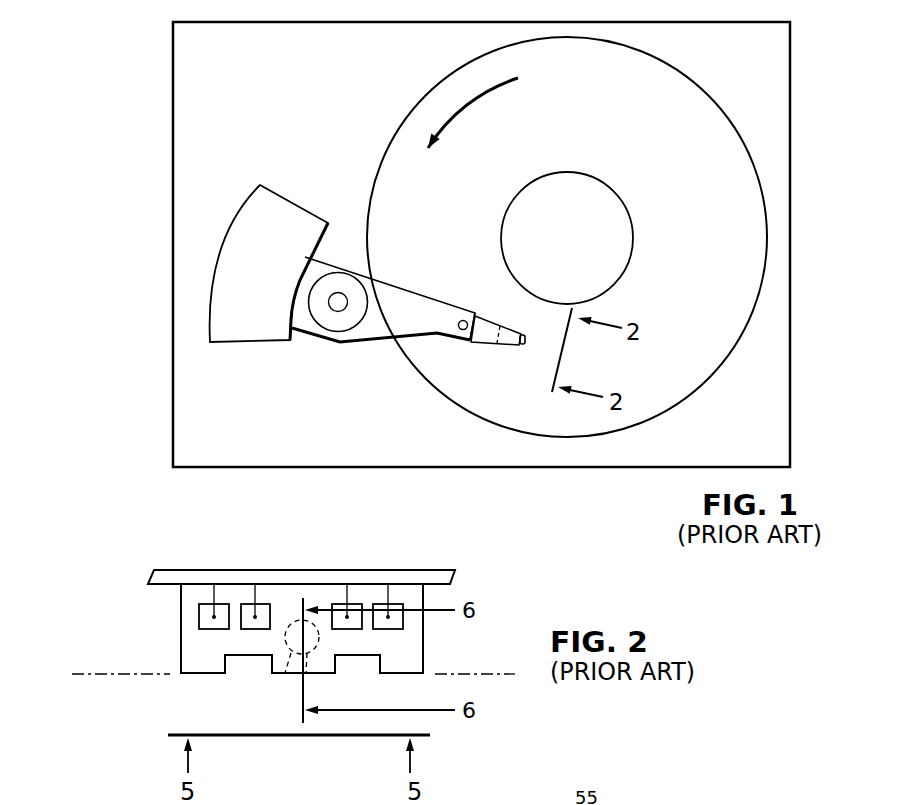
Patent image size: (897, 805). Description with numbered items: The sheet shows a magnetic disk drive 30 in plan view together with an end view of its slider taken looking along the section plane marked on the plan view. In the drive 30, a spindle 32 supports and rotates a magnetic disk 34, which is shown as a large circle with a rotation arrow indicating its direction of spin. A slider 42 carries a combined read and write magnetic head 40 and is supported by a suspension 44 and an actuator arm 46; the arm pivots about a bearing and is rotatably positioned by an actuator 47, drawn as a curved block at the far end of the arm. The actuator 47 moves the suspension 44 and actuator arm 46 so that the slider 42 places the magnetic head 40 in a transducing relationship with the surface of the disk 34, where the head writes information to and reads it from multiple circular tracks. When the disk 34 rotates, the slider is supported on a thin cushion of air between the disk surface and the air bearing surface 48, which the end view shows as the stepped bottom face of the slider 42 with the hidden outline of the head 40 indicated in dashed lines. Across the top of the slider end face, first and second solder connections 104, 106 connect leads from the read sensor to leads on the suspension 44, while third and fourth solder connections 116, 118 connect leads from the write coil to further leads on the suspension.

In FIG. 1, the magnetic disk drive 30 is at (807, 57).
In FIG. 1, the spindle 32 is at (606, 183).
In FIG. 1, the magnetic disk 34 is at (712, 257).
In FIG. 1, the magnetic head 40 is at (528, 346).
In FIG. 2, the magnetic head 40 is at (286, 677).
In FIG. 1, the slider 42 is at (523, 336).
In FIG. 2, the slider 42 is at (180, 615).
In FIG. 1, the suspension 44 is at (483, 343).
In FIG. 1, the actuator arm 46 is at (425, 303).
In FIG. 1, the actuator 47 is at (300, 215).
In FIG. 2, the air bearing surface 48 is at (100, 677).
In FIG. 2, the first solder connection 104 is at (198, 610).
In FIG. 2, the second solder connection 106 is at (373, 607).
In FIG. 2, the third solder connection 116 is at (242, 610).
In FIG. 2, the fourth solder connection 118 is at (332, 607).